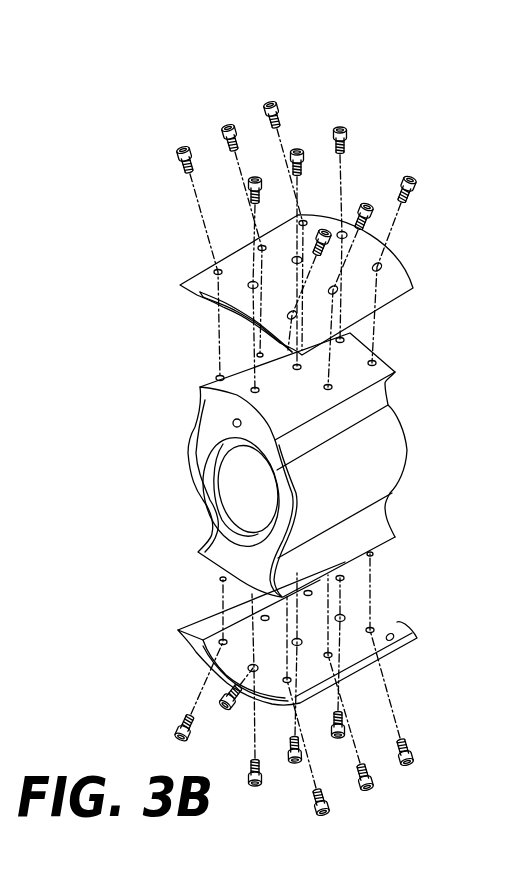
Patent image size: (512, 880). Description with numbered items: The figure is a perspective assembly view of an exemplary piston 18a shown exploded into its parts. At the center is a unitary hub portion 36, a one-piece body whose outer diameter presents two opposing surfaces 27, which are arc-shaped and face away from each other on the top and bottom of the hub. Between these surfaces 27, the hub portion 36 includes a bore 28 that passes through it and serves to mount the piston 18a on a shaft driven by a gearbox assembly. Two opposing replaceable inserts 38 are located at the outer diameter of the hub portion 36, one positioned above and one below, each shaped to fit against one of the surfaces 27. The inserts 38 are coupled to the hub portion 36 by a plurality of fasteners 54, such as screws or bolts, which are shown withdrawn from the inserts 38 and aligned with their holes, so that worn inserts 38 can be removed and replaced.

The piston 18a is at (341, 88).
The opposing surfaces 27 is at (383, 365).
The bore 28 is at (217, 500).
The unitary hub portion 36 is at (387, 428).
The replaceable inserts 38 is at (415, 282).
The fasteners 54 is at (178, 152).